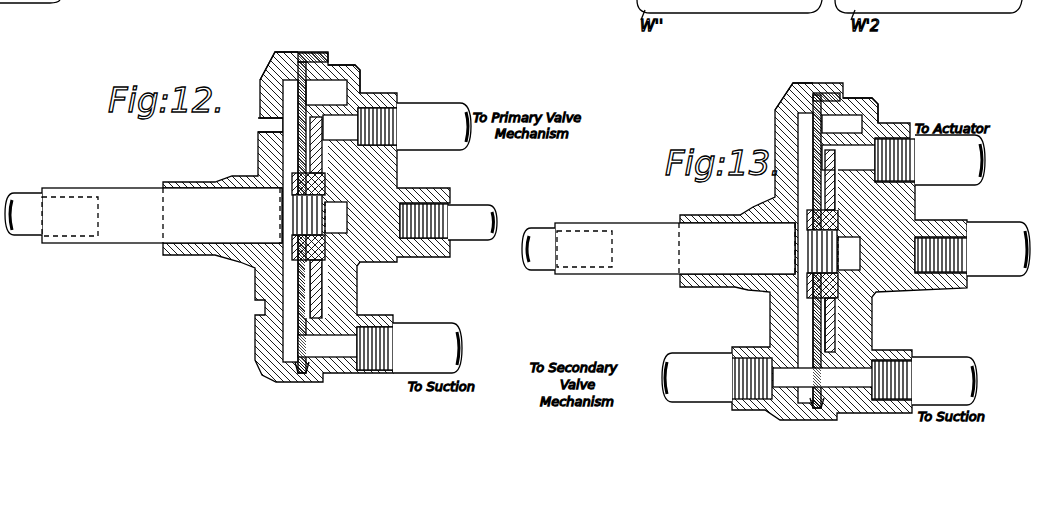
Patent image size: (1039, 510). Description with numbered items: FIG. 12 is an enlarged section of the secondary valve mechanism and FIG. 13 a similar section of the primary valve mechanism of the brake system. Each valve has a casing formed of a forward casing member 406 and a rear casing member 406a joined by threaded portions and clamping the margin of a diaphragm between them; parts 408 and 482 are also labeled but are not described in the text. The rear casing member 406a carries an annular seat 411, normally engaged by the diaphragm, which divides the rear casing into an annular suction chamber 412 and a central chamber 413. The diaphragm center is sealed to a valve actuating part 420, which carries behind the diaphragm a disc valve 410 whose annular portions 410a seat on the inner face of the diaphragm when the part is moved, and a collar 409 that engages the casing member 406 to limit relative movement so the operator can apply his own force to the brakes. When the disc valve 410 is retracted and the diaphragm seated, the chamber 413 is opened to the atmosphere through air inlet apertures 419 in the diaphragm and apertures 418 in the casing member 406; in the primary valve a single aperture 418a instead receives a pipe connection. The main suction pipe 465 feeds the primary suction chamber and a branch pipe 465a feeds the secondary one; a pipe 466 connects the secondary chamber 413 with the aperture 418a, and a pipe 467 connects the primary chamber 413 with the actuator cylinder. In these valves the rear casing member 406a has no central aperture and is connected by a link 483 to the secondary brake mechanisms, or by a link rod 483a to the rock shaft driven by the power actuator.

In FIG. 12, the forward casing member 406 is at (280, 68).
In FIG. 13, the forward casing member 406 is at (796, 97).
In FIG. 12, the rear casing member 406a is at (340, 78).
In FIG. 13, the rear casing member 406a is at (850, 100).
In FIG. 12, the casing cap 408 is at (295, 89).
In FIG. 13, the casing cap 408 is at (817, 122).
In FIG. 12, the collar 409 is at (293, 252).
In FIG. 13, the collar 409 is at (810, 288).
In FIG. 12, the disc valve 410 is at (318, 278).
In FIG. 13, the disc valve 410 is at (832, 192).
In FIG. 12, the annular portions 410a is at (315, 134).
In FIG. 13, the annular portions 410a is at (822, 160).
In FIG. 12, the annular seat 411 is at (322, 102).
In FIG. 13, the annular seat 411 is at (867, 128).
In FIG. 12, the annular suction chamber 412 is at (320, 90).
In FIG. 13, the annular suction chamber 412 is at (837, 113).
In FIG. 12, the central chamber 413 is at (322, 300).
In FIG. 13, the central chamber 413 is at (835, 328).
In FIG. 12, the apertures 418 is at (262, 127).
In FIG. 13, the single aperture 418a is at (787, 383).
In FIG. 12, the air inlet apertures 419 is at (305, 158).
In FIG. 13, the air inlet apertures 419 is at (817, 312).
In FIG. 12, the valve actuating part 420 is at (131, 197).
In FIG. 13, the valve actuating part 420 is at (627, 237).
In FIG. 13, the main suction pipe 465 is at (924, 381).
In FIG. 12, the branch pipe 465a is at (409, 348).
In FIG. 12, the pipe 466 is at (414, 126).
In FIG. 13, the pipe 466 is at (717, 377).
In FIG. 13, the pipe 467 is at (930, 160).
In FIG. 12, the shaft extension 482 is at (22, 198).
In FIG. 12, the link 483 is at (462, 212).
In FIG. 13, the link rod 483a is at (972, 249).